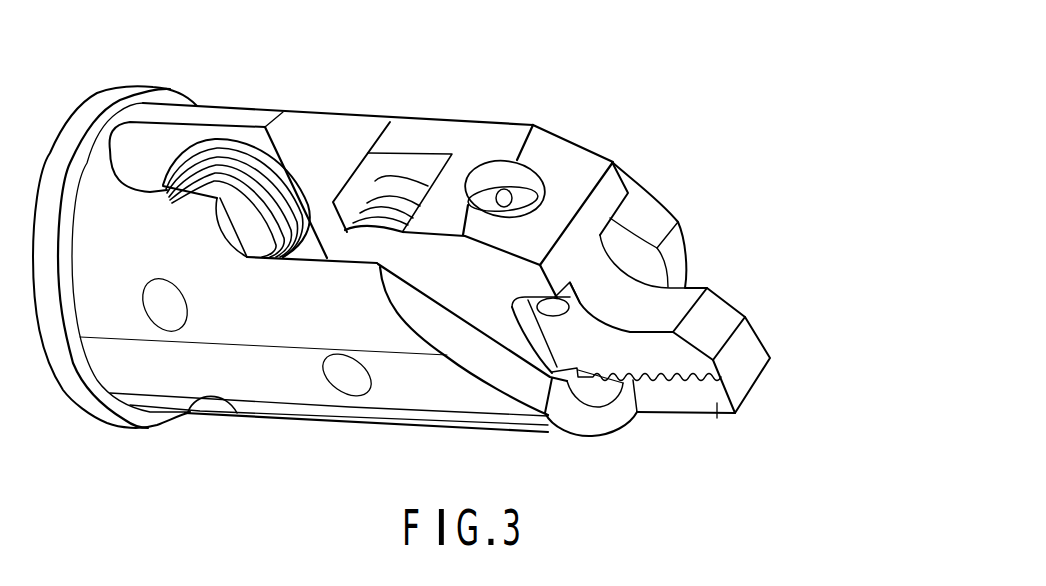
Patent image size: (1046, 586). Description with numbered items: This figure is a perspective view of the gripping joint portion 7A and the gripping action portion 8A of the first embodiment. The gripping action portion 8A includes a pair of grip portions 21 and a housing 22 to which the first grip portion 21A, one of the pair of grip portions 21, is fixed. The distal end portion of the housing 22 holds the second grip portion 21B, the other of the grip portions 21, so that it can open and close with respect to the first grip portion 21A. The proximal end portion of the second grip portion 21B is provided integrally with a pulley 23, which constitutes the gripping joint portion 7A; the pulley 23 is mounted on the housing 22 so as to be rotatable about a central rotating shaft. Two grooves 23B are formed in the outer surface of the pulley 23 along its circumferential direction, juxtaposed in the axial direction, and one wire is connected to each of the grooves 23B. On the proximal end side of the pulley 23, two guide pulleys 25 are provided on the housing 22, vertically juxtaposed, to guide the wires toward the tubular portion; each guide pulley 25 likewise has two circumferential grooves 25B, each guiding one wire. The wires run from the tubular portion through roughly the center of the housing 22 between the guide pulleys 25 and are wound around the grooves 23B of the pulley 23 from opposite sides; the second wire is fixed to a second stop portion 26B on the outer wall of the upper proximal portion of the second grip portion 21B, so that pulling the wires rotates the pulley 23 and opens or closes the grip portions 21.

The gripping action portion 8A is at (462, 248).
The pair of grip portions 21 is at (702, 304).
The first grip portion 21A is at (838, 290).
The second grip portion 21B is at (725, 313).
The housing 22 is at (297, 401).
The pulley 23 is at (473, 183).
The gripping joint portion 7A is at (415, 183).
The grooves 23B is at (390, 202).
The guide pulleys 25 is at (243, 153).
The grooves 25B is at (195, 170).
The second stop portion 26B is at (520, 192).